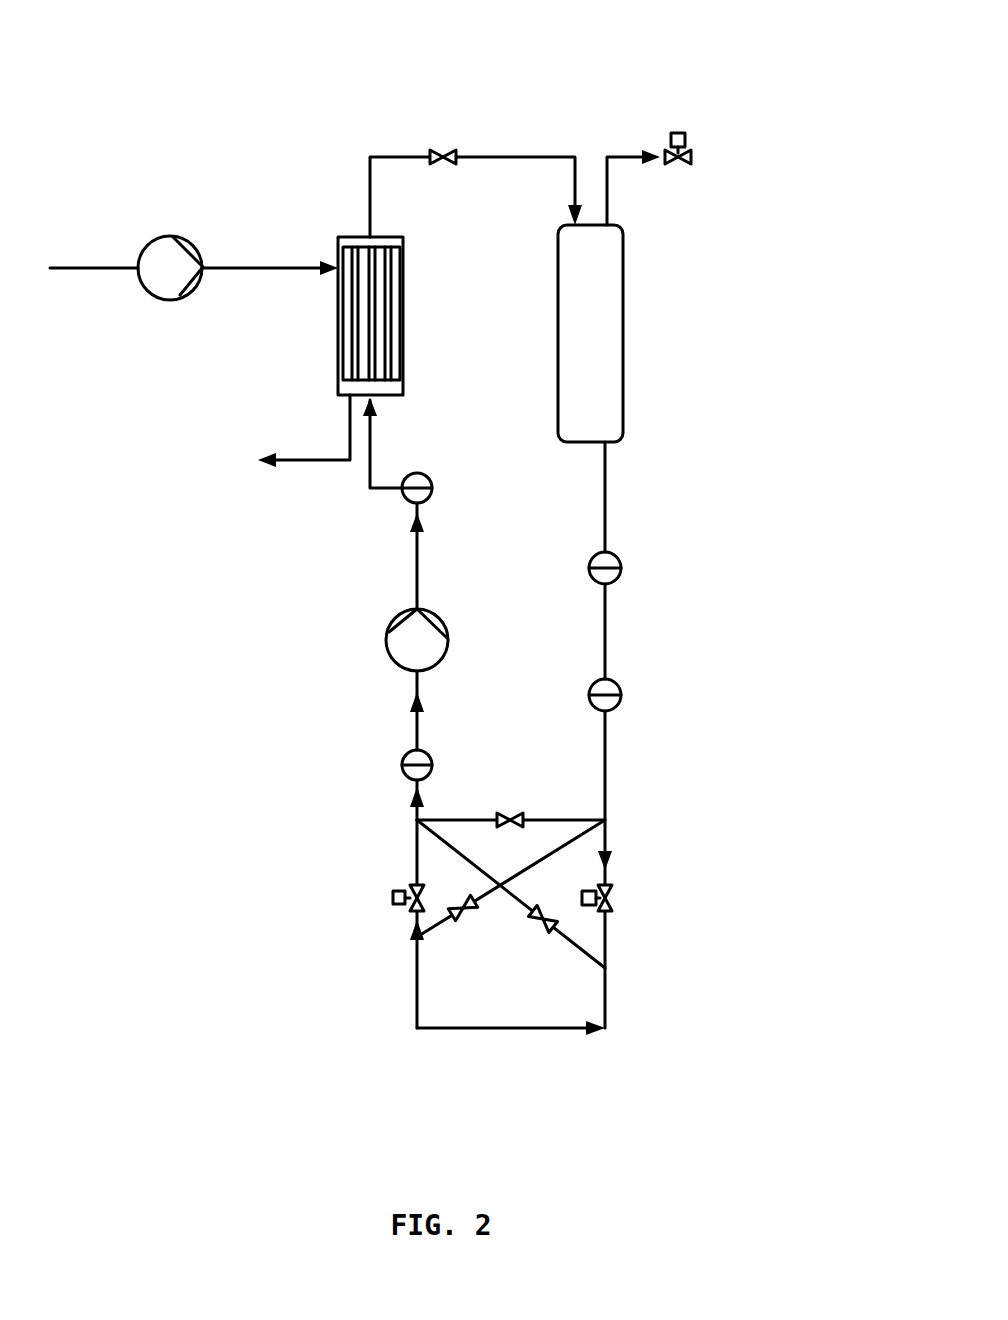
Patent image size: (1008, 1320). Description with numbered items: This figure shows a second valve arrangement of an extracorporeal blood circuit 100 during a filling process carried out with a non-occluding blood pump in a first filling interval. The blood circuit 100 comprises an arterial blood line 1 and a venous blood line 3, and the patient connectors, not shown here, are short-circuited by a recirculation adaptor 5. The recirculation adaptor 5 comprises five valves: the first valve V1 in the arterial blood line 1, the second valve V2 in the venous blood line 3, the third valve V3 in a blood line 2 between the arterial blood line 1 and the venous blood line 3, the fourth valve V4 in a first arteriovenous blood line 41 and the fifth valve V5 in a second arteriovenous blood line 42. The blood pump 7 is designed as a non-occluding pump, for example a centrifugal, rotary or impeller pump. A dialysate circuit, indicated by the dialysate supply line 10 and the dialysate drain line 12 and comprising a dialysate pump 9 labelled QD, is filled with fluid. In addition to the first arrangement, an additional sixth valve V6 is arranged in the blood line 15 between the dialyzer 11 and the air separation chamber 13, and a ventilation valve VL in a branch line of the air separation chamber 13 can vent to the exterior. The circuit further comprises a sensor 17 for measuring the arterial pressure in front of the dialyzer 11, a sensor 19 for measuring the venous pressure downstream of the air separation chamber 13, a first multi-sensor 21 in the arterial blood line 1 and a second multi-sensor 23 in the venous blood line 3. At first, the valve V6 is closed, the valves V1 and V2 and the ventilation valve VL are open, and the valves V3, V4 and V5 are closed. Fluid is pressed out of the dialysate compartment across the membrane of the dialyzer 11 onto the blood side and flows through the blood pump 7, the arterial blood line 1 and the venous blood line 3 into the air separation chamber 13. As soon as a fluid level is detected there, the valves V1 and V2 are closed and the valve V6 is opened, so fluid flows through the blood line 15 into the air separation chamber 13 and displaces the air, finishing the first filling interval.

The extracorporeal blood circuit 100 is at (772, 225).
The arterial blood line 1 is at (416, 582).
The blood line 2 is at (551, 820).
The venous blood line 3 is at (607, 770).
The recirculation adaptor 5 is at (503, 1097).
The blood pump 7 is at (400, 642).
The dialysate pump 9 is at (160, 272).
The dialysate supply line 10 is at (270, 268).
The dialyzer 11 is at (338, 330).
The dialysate drain line 12 is at (335, 463).
The air separation chamber 13 is at (612, 300).
The blood line 15 is at (488, 157).
The sensor 17 is at (420, 473).
The sensor 19 is at (608, 552).
The first multi-sensor 21 is at (403, 772).
The second multi-sensor 23 is at (608, 680).
The first arteriovenous blood line 41 is at (500, 902).
The second arteriovenous blood line 42 is at (577, 947).
The feed pump QD is at (170, 222).
The first valve V1 is at (392, 903).
The second valve V2 is at (612, 898).
The third valve V3 is at (511, 815).
The fourth valve V4 is at (458, 897).
The fifth valve V5 is at (530, 930).
The sixth valve V6 is at (443, 157).
The ventilation valve VL is at (692, 148).